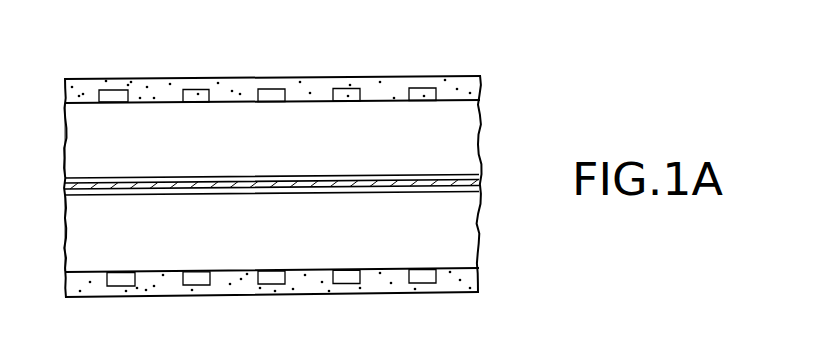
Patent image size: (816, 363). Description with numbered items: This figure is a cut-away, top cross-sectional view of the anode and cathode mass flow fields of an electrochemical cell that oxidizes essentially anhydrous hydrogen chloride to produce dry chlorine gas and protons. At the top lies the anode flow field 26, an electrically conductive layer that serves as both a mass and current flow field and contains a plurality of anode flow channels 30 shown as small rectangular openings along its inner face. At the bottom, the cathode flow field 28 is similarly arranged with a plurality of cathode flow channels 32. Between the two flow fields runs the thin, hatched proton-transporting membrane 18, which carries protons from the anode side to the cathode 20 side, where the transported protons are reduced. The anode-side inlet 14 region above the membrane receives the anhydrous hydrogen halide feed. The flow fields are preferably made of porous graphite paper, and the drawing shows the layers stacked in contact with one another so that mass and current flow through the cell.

The anode-side inlet 14 is at (68, 243).
The proton-transporting membrane 18 is at (479, 183).
The cathode 20 is at (68, 243).
The anode flow field 26 is at (203, 78).
The cathode flow field 28 is at (203, 297).
The anode flow channels 30 is at (118, 80).
The cathode flow channels 32 is at (118, 290).